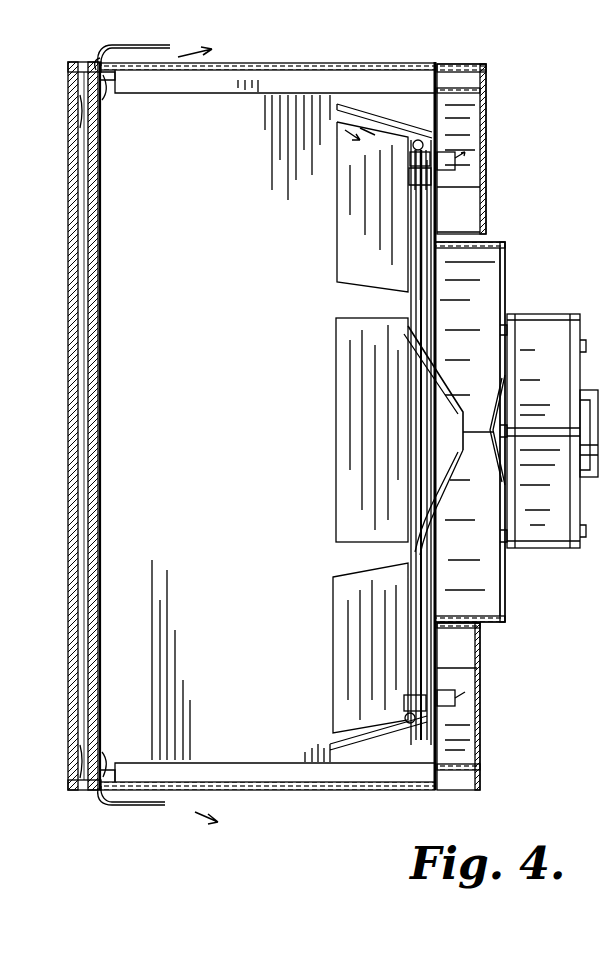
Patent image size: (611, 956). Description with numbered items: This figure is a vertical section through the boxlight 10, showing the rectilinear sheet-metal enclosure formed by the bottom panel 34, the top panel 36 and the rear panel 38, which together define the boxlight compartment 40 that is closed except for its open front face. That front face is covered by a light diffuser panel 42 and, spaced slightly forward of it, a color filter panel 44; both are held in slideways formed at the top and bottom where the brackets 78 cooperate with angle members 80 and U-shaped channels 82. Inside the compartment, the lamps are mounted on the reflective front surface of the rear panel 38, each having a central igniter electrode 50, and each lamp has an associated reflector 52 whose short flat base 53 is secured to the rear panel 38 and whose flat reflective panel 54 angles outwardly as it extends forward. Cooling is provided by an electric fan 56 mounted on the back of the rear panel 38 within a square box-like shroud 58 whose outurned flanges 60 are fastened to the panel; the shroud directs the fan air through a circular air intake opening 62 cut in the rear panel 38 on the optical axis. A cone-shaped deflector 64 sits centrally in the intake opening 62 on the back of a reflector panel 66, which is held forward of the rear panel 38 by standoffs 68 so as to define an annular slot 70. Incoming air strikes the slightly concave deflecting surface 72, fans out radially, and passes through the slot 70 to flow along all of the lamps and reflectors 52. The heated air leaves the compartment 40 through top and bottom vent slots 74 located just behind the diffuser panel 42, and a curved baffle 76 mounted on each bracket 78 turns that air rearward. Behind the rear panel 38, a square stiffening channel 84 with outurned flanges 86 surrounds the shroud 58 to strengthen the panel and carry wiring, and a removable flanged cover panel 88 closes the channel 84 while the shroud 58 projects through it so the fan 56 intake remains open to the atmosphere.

The boxlight 10 is at (72, 819).
The bottom panel 34 is at (288, 792).
The top panel 36 is at (263, 65).
The rear panel 38 is at (470, 103).
The boxlight compartment 40 is at (236, 392).
The light diffuser panel 42 is at (100, 302).
The color filter panel 44 is at (68, 303).
The igniter electrode 50 is at (455, 162).
The reflector 52 is at (408, 112).
The base 53 is at (440, 140).
The reflective panel 54 is at (372, 115).
The electric fan 56 is at (578, 382).
The shroud 58 is at (508, 285).
The outurned flanges 60 is at (445, 240).
The air intake opening 62 is at (441, 518).
The deflector 64 is at (448, 452).
The reflector panel 66 is at (405, 374).
The standoffs 68 is at (405, 205).
The annular slot 70 is at (420, 165).
The deflecting surface 72 is at (445, 380).
The vent slots 74 is at (112, 82).
The curved baffle 76 is at (112, 40).
The bracket 78 is at (100, 62).
The angle members 80 is at (117, 100).
The U-shaped channels 82 is at (74, 122).
The stiffening channel 84 is at (470, 197).
The outurned flanges 86 is at (445, 70).
The flanged cover panel 88 is at (482, 760).